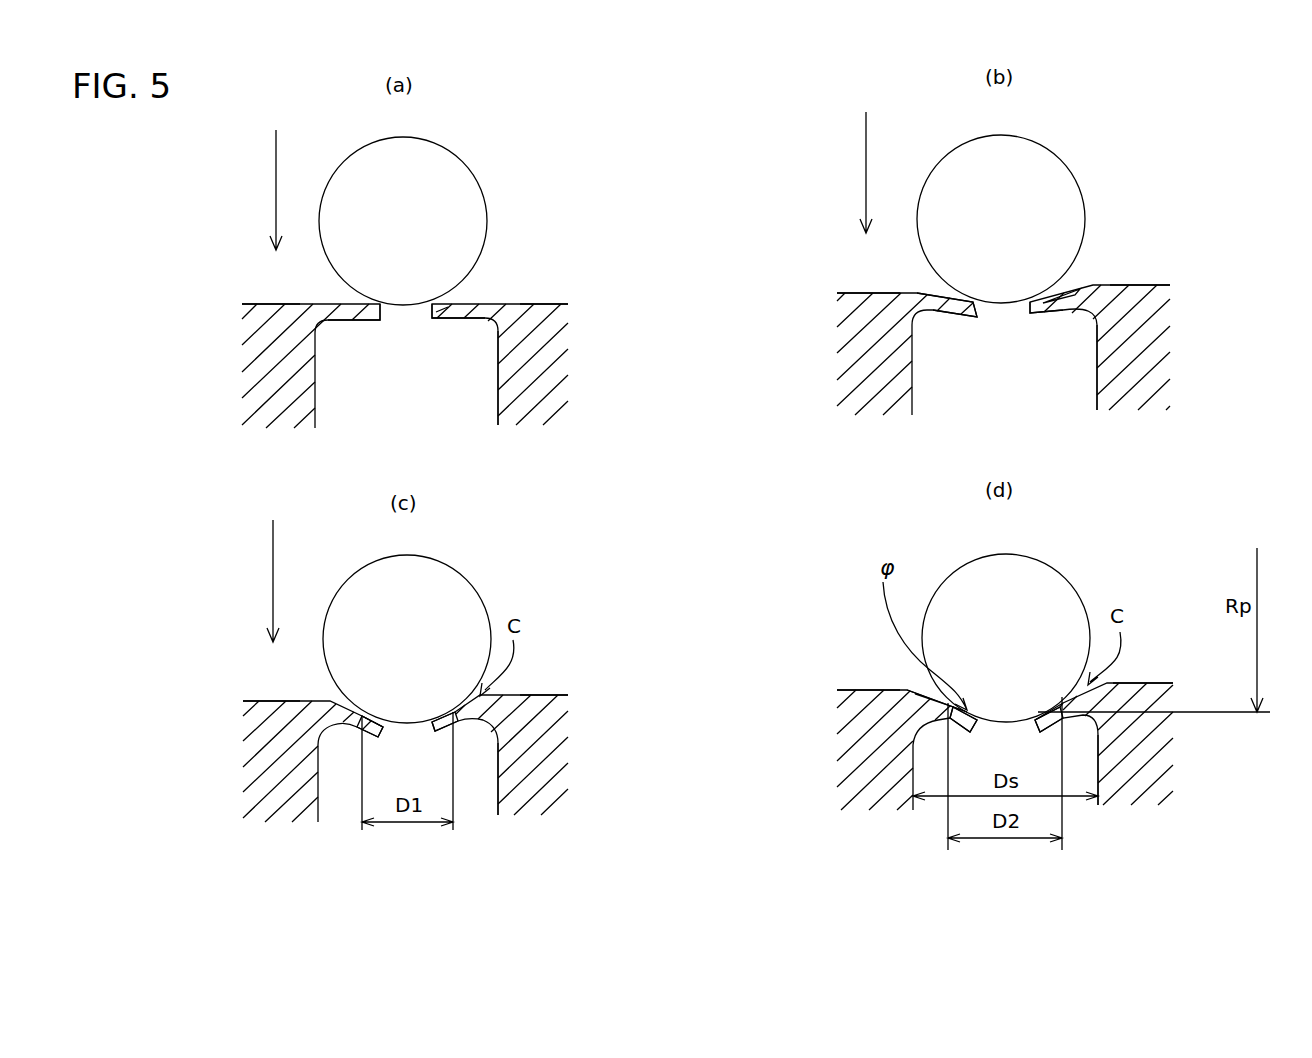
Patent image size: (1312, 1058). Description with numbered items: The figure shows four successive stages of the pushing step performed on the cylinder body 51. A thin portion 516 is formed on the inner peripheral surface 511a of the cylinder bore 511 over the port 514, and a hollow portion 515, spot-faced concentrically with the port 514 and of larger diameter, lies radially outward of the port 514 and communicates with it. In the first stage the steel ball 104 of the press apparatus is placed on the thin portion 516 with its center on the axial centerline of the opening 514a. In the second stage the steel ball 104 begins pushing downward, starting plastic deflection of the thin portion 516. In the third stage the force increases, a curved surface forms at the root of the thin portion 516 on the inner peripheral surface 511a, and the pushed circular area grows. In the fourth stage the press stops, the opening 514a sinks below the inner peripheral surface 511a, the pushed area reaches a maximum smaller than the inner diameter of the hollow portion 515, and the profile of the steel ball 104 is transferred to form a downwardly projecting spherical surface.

The cylinder body 51 is at (247, 347).
The steel ball 104 is at (458, 163).
The cylinder bore 511 is at (548, 300).
The inner peripheral surface 511a is at (257, 303).
The port 514 is at (432, 318).
The opening 514a is at (382, 318).
The hollow portion 515 is at (488, 412).
The thin portion 516 is at (443, 309).